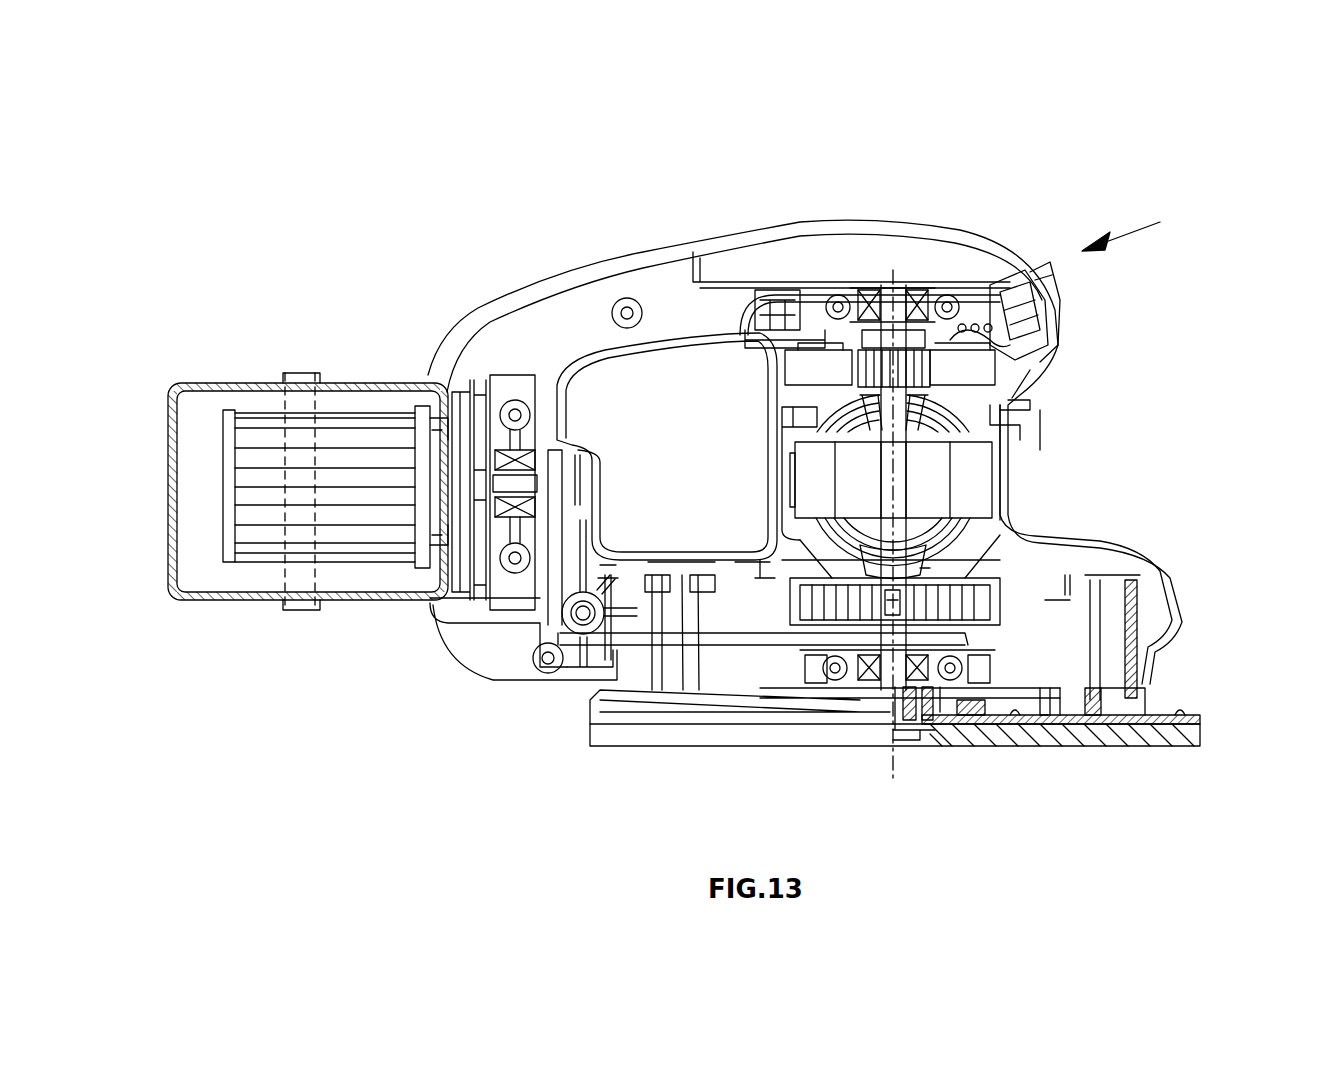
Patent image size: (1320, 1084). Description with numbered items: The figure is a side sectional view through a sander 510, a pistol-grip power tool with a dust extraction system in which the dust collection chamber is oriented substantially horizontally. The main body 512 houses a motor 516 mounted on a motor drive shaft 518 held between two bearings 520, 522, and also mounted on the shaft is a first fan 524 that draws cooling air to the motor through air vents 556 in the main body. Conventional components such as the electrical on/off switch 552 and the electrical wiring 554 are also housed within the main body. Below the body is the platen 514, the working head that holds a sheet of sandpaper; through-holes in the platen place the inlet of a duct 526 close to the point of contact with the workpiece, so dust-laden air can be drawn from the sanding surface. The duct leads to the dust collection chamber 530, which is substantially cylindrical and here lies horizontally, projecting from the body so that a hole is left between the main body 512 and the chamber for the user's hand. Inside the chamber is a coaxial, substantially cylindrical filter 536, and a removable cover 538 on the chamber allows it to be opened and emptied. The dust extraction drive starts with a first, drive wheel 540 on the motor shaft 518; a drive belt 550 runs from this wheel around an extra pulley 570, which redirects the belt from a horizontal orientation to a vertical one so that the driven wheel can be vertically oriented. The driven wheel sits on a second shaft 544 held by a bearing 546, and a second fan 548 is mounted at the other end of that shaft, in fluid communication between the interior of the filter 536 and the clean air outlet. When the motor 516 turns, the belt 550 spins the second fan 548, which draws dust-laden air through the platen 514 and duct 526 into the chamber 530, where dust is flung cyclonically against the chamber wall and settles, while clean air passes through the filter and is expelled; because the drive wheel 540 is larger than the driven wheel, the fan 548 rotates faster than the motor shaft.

The sander 510 is at (1156, 229).
The main body 512 is at (1140, 562).
The platen 514 is at (1135, 745).
The motor 516 is at (970, 470).
The motor drive shaft 518 is at (887, 295).
The bearing 520 is at (925, 665).
The bearing 522 is at (912, 295).
The first fan 524 is at (955, 598).
The duct 526 is at (463, 645).
The dust collection chamber 530 is at (375, 385).
The filter 536 is at (262, 435).
The removable cover 538 is at (165, 435).
The first, drive wheel 540 is at (855, 637).
The second shaft 544 is at (502, 487).
The bearing 546 is at (540, 460).
The second fan 548 is at (477, 522).
The drive belt 550 is at (625, 635).
The electrical on/off switch 552 is at (1050, 308).
The electrical wiring 554 is at (820, 295).
The air vents 556 is at (1040, 410).
The pulley 570 is at (567, 613).